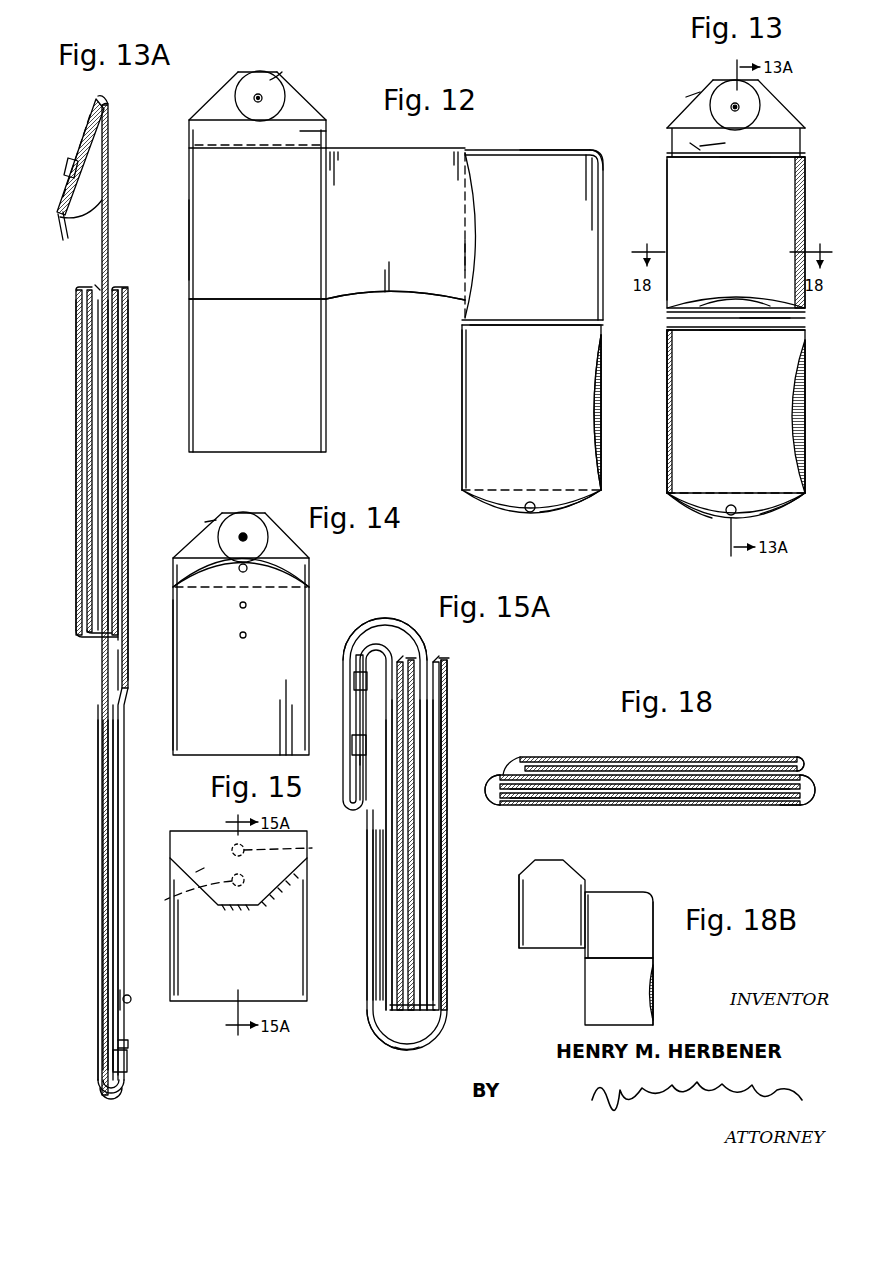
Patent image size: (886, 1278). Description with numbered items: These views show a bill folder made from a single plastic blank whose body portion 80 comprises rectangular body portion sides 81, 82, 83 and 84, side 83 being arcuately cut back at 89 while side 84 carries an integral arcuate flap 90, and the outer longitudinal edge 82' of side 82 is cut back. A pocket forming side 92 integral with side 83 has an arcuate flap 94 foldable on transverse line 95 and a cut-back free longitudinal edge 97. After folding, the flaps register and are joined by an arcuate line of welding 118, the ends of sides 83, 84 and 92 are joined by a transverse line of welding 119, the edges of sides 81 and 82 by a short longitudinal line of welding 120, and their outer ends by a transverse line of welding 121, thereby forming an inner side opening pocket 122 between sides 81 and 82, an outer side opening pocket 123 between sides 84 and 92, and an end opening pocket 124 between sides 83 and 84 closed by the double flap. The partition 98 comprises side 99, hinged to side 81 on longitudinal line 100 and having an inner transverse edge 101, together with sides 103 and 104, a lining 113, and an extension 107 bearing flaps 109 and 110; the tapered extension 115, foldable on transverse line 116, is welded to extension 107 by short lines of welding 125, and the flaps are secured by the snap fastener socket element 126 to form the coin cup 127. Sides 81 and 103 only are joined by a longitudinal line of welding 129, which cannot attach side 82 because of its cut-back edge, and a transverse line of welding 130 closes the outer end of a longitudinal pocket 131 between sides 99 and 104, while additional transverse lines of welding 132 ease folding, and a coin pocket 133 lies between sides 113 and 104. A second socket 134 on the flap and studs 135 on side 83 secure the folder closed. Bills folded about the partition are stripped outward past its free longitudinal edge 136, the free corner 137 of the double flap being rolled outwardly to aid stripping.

In FIG. 12, the body portion 80 is at (462, 395).
In FIG. 13, the body portion 80 is at (682, 390).
In FIG. 13A, the body portion 80 is at (130, 497).
In FIG. 14, the body portion 80 is at (182, 687).
In FIG. 15A, the body portion 80 is at (449, 695).
In FIG. 18, the body portion 80 is at (728, 758).
In FIG. 18B, the body portion 80 is at (640, 950).
In FIG. 13A, the body portion side 81 is at (128, 340).
In FIG. 15A, the body portion side 81 is at (446, 904).
In FIG. 18, the body portion side 81 is at (595, 760).
In FIG. 12, the body portion side 82 is at (534, 235).
In FIG. 13A, the body portion side 82 is at (136, 462).
In FIG. 15A, the body portion side 82 is at (455, 850).
In FIG. 18, the body portion side 82 is at (658, 750).
In FIG. 18B, the body portion side 82 is at (619, 913).
In FIG. 12, the cut back outer longitudinal edge 82' is at (491, 235).
In FIG. 18, the cut back outer longitudinal edge 82' is at (517, 752).
In FIG. 13A, the body portion side 83 is at (118, 839).
In FIG. 14, the body portion side 83 is at (220, 700).
In FIG. 15, the body portion side 83 is at (228, 956).
In FIG. 15A, the body portion side 83 is at (370, 969).
In FIG. 12, the body portion side 84 is at (600, 421).
In FIG. 13, the body portion side 84 is at (646, 411).
In FIG. 13A, the body portion side 84 is at (112, 857).
In FIG. 15A, the body portion side 84 is at (380, 949).
In FIG. 13A, the arcuate cut back 89 is at (112, 1101).
In FIG. 13A, the arcuate flap 90 is at (125, 1096).
In FIG. 14, the arcuate flap 90 is at (282, 581).
In FIG. 12, the pocket forming side 92 is at (521, 420).
In FIG. 13, the pocket forming side 92 is at (720, 420).
In FIG. 13A, the pocket forming side 92 is at (105, 875).
In FIG. 15A, the pocket forming side 92 is at (380, 929).
In FIG. 18B, the pocket forming side 92 is at (640, 1008).
In FIG. 12, the arcuate flap 94 is at (510, 508).
In FIG. 13, the arcuate flap 94 is at (702, 510).
In FIG. 13A, the arcuate flap 94 is at (127, 1081).
In FIG. 12, the transverse fold line 95 is at (535, 490).
In FIG. 13, the transverse fold line 95 is at (738, 493).
In FIG. 12, the free longitudinal edge 97 is at (593, 431).
In FIG. 13, the free longitudinal edge 97 is at (800, 403).
In FIG. 12, the partition 98 is at (189, 238).
In FIG. 13, the partition 98 is at (690, 204).
In FIG. 13A, the partition 98 is at (76, 482).
In FIG. 15A, the partition 98 is at (427, 889).
In FIG. 18, the partition 98 is at (794, 806).
In FIG. 18B, the partition 98 is at (530, 940).
In FIG. 12, the partition side 99 is at (375, 217).
In FIG. 13, the partition side 99 is at (722, 228).
In FIG. 13A, the partition side 99 is at (78, 457).
In FIG. 15A, the partition side 99 is at (395, 991).
In FIG. 18, the partition side 99 is at (645, 806).
In FIG. 12, the longitudinal fold line 100 is at (465, 257).
In FIG. 12, the inner transverse edge 101 is at (390, 295).
In FIG. 13, the inner transverse edge 101 is at (752, 300).
In FIG. 13A, the inner transverse edge 101 is at (82, 633).
In FIG. 13A, the partition side 103 is at (108, 386).
In FIG. 15A, the partition side 103 is at (420, 859).
In FIG. 18, the partition side 103 is at (752, 781).
In FIG. 18B, the partition side 103 is at (549, 948).
In FIG. 12, the partition side 104 is at (239, 391).
In FIG. 13, the partition side 104 is at (730, 298).
In FIG. 13A, the partition side 104 is at (92, 433).
In FIG. 15A, the partition side 104 is at (405, 966).
In FIG. 18, the partition side 104 is at (700, 794).
In FIG. 13A, the longitudinal extension 107 is at (110, 197).
In FIG. 15, the longitudinal extension 107 is at (210, 849).
In FIG. 15A, the longitudinal extension 107 is at (345, 672).
In FIG. 12, the flap 109 is at (224, 104).
In FIG. 13, the flap 109 is at (693, 108).
In FIG. 13A, the flap 109 is at (66, 226).
In FIG. 14, the flap 109 is at (202, 542).
In FIG. 12, the flap 110 is at (282, 90).
In FIG. 13, the flap 110 is at (725, 85).
In FIG. 13A, the flap 110 is at (86, 136).
In FIG. 14, the flap 110 is at (268, 525).
In FIG. 15A, the flap 110 is at (376, 827).
In FIG. 12, the pocket reinforcing side or lining 113 is at (237, 228).
In FIG. 13A, the pocket reinforcing side or lining 113 is at (103, 408).
In FIG. 15A, the pocket reinforcing side or lining 113 is at (400, 836).
In FIG. 18, the pocket reinforcing side or lining 113 is at (583, 786).
In FIG. 12, the tapered extension 115 is at (305, 131).
In FIG. 13, the tapered extension 115 is at (715, 145).
In FIG. 13A, the tapered extension 115 is at (97, 206).
In FIG. 14, the tapered extension 115 is at (186, 571).
In FIG. 15A, the tapered extension 115 is at (352, 700).
In FIG. 12, the transverse fold line 116 is at (226, 148).
In FIG. 12, the arcuate line of welding 118 is at (560, 513).
In FIG. 13, the arcuate line of welding 118 is at (775, 509).
In FIG. 13A, the arcuate line of welding 118 is at (126, 1046).
In FIG. 14, the arcuate line of welding 118 is at (282, 568).
In FIG. 12, the transverse line of welding 119 is at (516, 327).
In FIG. 13, the transverse line of welding 119 is at (728, 331).
In FIG. 13A, the transverse line of welding 119 is at (123, 689).
In FIG. 15A, the transverse line of welding 119 is at (375, 1012).
In FIG. 12, the short longitudinal line of welding 120 is at (462, 319).
In FIG. 13, the short longitudinal line of welding 120 is at (667, 318).
In FIG. 12, the transverse line of welding 121 is at (535, 152).
In FIG. 13A, the transverse line of welding 121 is at (128, 289).
In FIG. 15A, the transverse line of welding 121 is at (449, 661).
In FIG. 12, the inner side opening pocket 122 is at (463, 213).
In FIG. 13A, the inner side opening pocket 122 is at (128, 318).
In FIG. 15A, the inner side opening pocket 122 is at (440, 731).
In FIG. 18, the inner side opening pocket 122 is at (628, 762).
In FIG. 12, the outer side opening pocket 123 is at (603, 372).
In FIG. 13, the outer side opening pocket 123 is at (817, 388).
In FIG. 13A, the outer side opening pocket 123 is at (110, 896).
In FIG. 15A, the outer side opening pocket 123 is at (376, 901).
In FIG. 13, the end opening pocket 124 is at (673, 505).
In FIG. 13A, the end opening pocket 124 is at (122, 821).
In FIG. 15A, the end opening pocket 124 is at (367, 877).
In FIG. 12, the short lines of welding 125 is at (189, 137).
In FIG. 13, the short lines of welding 125 is at (667, 141).
In FIG. 12, the snap fastener socket element 126 is at (258, 94).
In FIG. 13, the snap fastener socket element 126 is at (733, 104).
In FIG. 13A, the snap fastener socket element 126 is at (88, 173).
In FIG. 14, the snap fastener socket element 126 is at (243, 530).
In FIG. 15, the snap fastener socket element 126 is at (285, 850).
In FIG. 15A, the snap fastener socket element 126 is at (350, 751).
In FIG. 12, the coin cup 127 is at (277, 80).
In FIG. 13, the coin cup 127 is at (688, 94).
In FIG. 13A, the coin cup 127 is at (110, 113).
In FIG. 14, the coin cup 127 is at (212, 522).
In FIG. 15, the coin cup 127 is at (200, 871).
In FIG. 15A, the coin cup 127 is at (345, 771).
In FIG. 18, the longitudinal line of welding 129 is at (495, 806).
In FIG. 13, the transverse line of welding 130 is at (742, 159).
In FIG. 13A, the transverse line of welding 130 is at (84, 288).
In FIG. 15A, the transverse line of welding 130 is at (425, 660).
In FIG. 13, the longitudinal pocket 131 is at (720, 302).
In FIG. 13A, the longitudinal pocket 131 is at (82, 641).
In FIG. 15A, the longitudinal pocket 131 is at (405, 811).
In FIG. 18, the longitudinal pocket 131 is at (618, 802).
In FIG. 13, the transverse line of welding 132 is at (765, 318).
In FIG. 13A, the transverse line of welding 132 is at (120, 661).
In FIG. 15A, the transverse line of welding 132 is at (406, 1052).
In FIG. 13, the coin pocket 133 is at (695, 145).
In FIG. 13A, the coin pocket 133 is at (96, 284).
In FIG. 15A, the coin pocket 133 is at (410, 755).
In FIG. 18, the coin pocket 133 is at (678, 775).
In FIG. 13A, the snap fastener socket 134 is at (128, 1063).
In FIG. 14, the snap fastener socket 134 is at (240, 574).
In FIG. 15, the snap fastener socket 134 is at (187, 891).
In FIG. 13A, the snap fastener studs 135 is at (130, 1003).
In FIG. 14, the snap fastener studs 135 is at (248, 636).
In FIG. 13, the free longitudinal edge 136 is at (805, 214).
In FIG. 18, the free longitudinal edge 136 is at (813, 786).
In FIG. 12, the free corner 137 is at (604, 150).